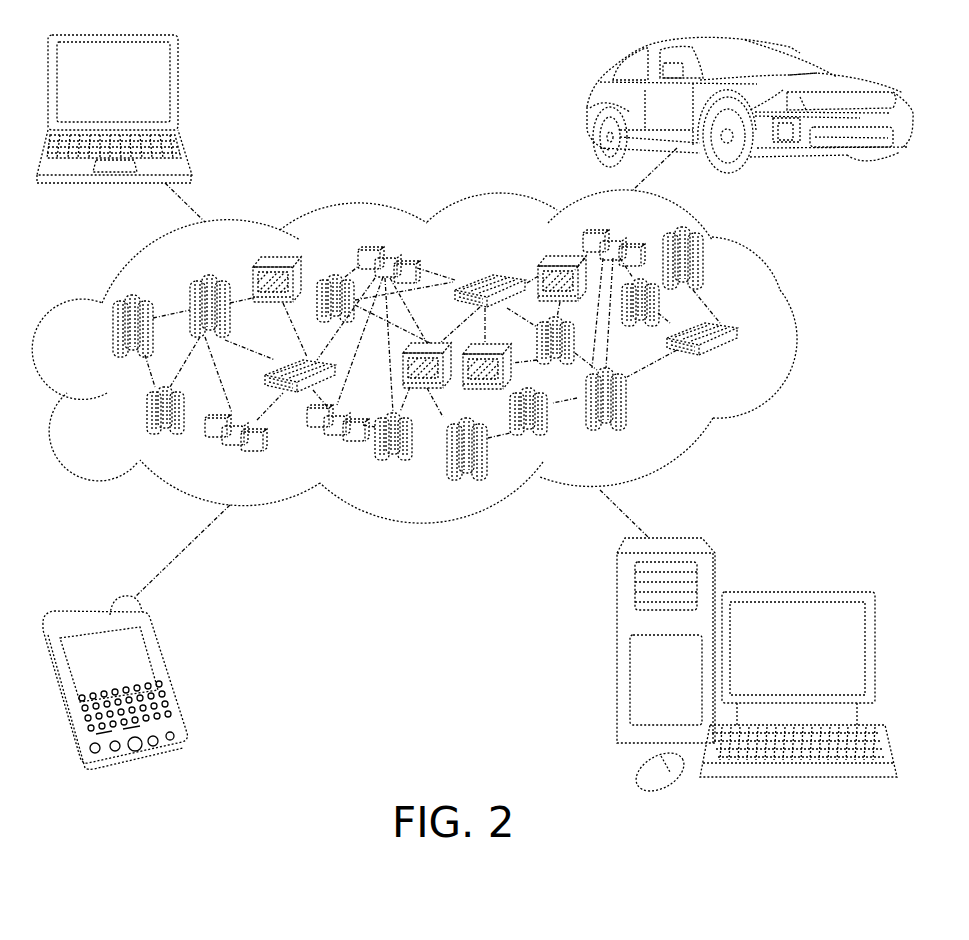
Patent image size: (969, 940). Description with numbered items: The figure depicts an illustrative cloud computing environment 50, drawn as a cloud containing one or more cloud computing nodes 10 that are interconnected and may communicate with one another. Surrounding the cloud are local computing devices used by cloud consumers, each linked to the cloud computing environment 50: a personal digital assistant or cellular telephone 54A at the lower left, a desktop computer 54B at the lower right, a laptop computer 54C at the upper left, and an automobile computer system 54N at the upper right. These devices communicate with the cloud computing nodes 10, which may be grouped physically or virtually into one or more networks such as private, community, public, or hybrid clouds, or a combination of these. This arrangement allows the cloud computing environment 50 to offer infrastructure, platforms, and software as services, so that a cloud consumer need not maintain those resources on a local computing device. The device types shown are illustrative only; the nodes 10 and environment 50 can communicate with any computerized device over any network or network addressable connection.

The cloud computing node 10 is at (750, 364).
The cloud computing environment 50 is at (793, 333).
The personal digital assistant (PDA) or cellular telephone 54A is at (165, 672).
The desktop computer 54B is at (795, 590).
The laptop computer 54C is at (178, 90).
The automobile computer system 54N is at (583, 102).